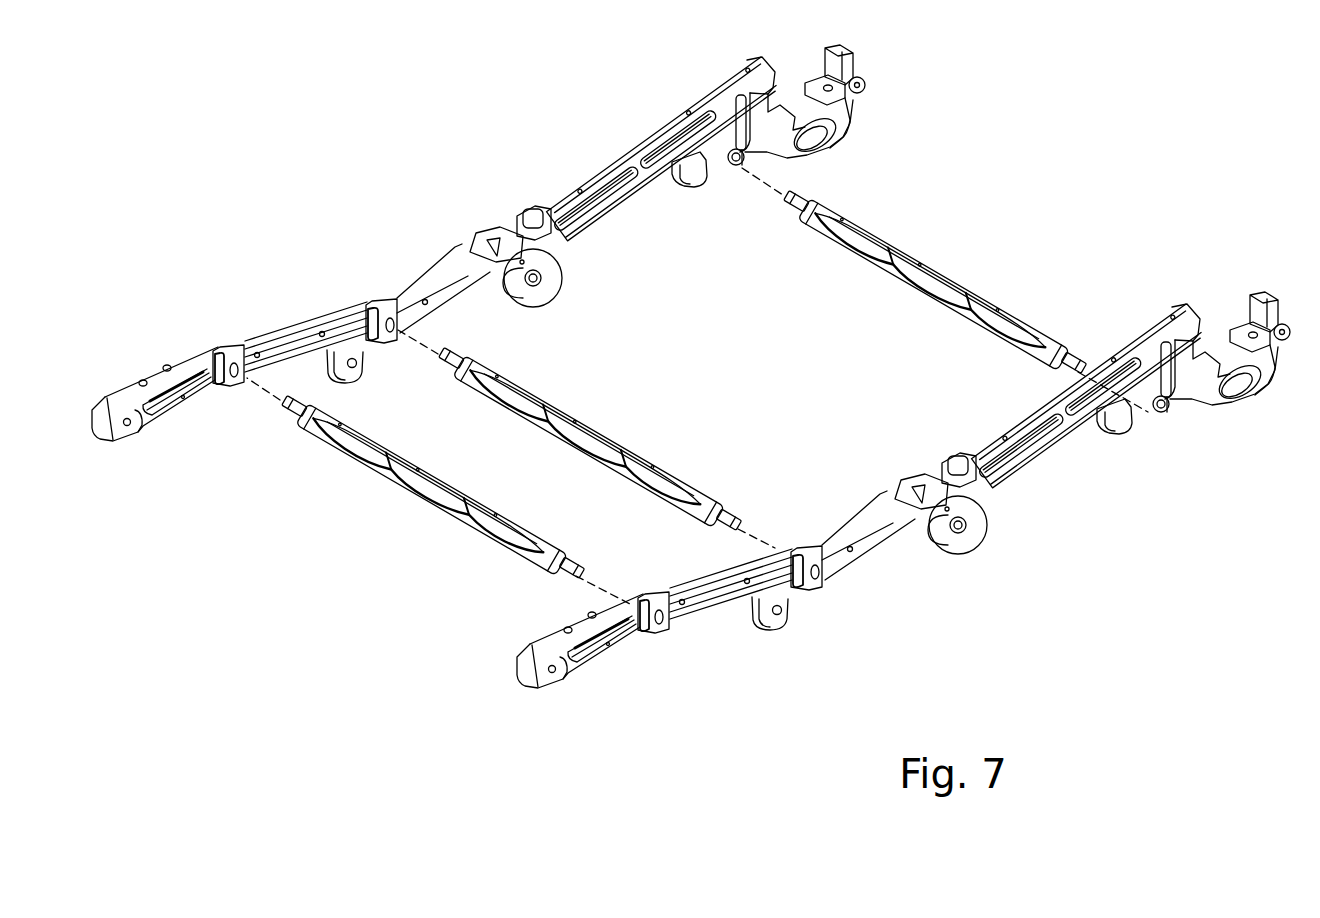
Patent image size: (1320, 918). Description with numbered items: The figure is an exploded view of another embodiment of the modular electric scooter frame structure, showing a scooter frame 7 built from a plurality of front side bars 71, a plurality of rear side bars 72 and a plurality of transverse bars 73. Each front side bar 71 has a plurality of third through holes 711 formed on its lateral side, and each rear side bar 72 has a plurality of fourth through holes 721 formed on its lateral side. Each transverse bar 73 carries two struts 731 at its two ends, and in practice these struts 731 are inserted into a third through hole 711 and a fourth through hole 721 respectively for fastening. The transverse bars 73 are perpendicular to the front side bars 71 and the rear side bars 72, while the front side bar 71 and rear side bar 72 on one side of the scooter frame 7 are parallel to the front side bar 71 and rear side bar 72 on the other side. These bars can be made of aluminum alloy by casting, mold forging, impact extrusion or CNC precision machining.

The scooter frame 7 is at (360, 144).
The front side bar 71 is at (297, 330).
The third through hole 711 is at (237, 383).
The rear side bar 72 is at (648, 143).
The fourth through hole 721 is at (737, 168).
The transverse bar 73 is at (420, 477).
The strut 731 is at (292, 413).